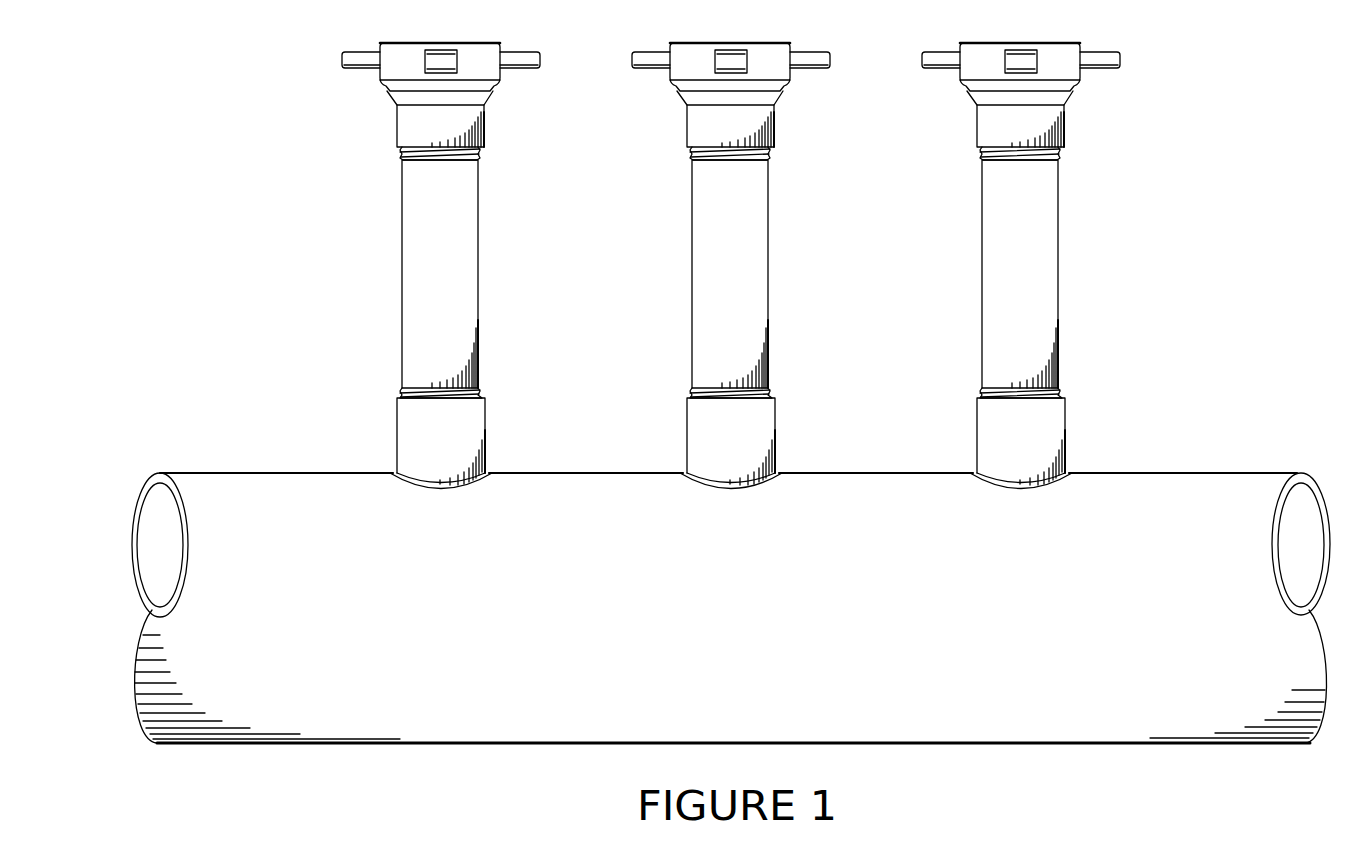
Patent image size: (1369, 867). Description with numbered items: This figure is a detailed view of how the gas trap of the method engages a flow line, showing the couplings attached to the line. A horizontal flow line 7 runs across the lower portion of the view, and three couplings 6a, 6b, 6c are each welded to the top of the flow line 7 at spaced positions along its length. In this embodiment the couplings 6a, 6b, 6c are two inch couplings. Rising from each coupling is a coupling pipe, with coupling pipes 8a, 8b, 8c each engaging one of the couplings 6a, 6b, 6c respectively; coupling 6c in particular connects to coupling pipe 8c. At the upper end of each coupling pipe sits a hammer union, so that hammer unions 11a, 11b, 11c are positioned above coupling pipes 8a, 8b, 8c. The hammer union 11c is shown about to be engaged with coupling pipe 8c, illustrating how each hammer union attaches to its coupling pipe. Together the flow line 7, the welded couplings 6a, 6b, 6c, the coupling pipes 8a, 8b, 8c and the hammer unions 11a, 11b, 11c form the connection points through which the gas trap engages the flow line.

The flow line 7 is at (243, 487).
The coupling 6a is at (405, 433).
The coupling 6b is at (695, 433).
The coupling 6c is at (985, 433).
The coupling pipe 8a is at (467, 253).
The coupling pipe 8b is at (757, 253).
The coupling pipe 8c is at (1047, 253).
The hammer union 11a is at (488, 80).
The hammer union 11b is at (778, 80).
The hammer union 11c is at (1068, 80).